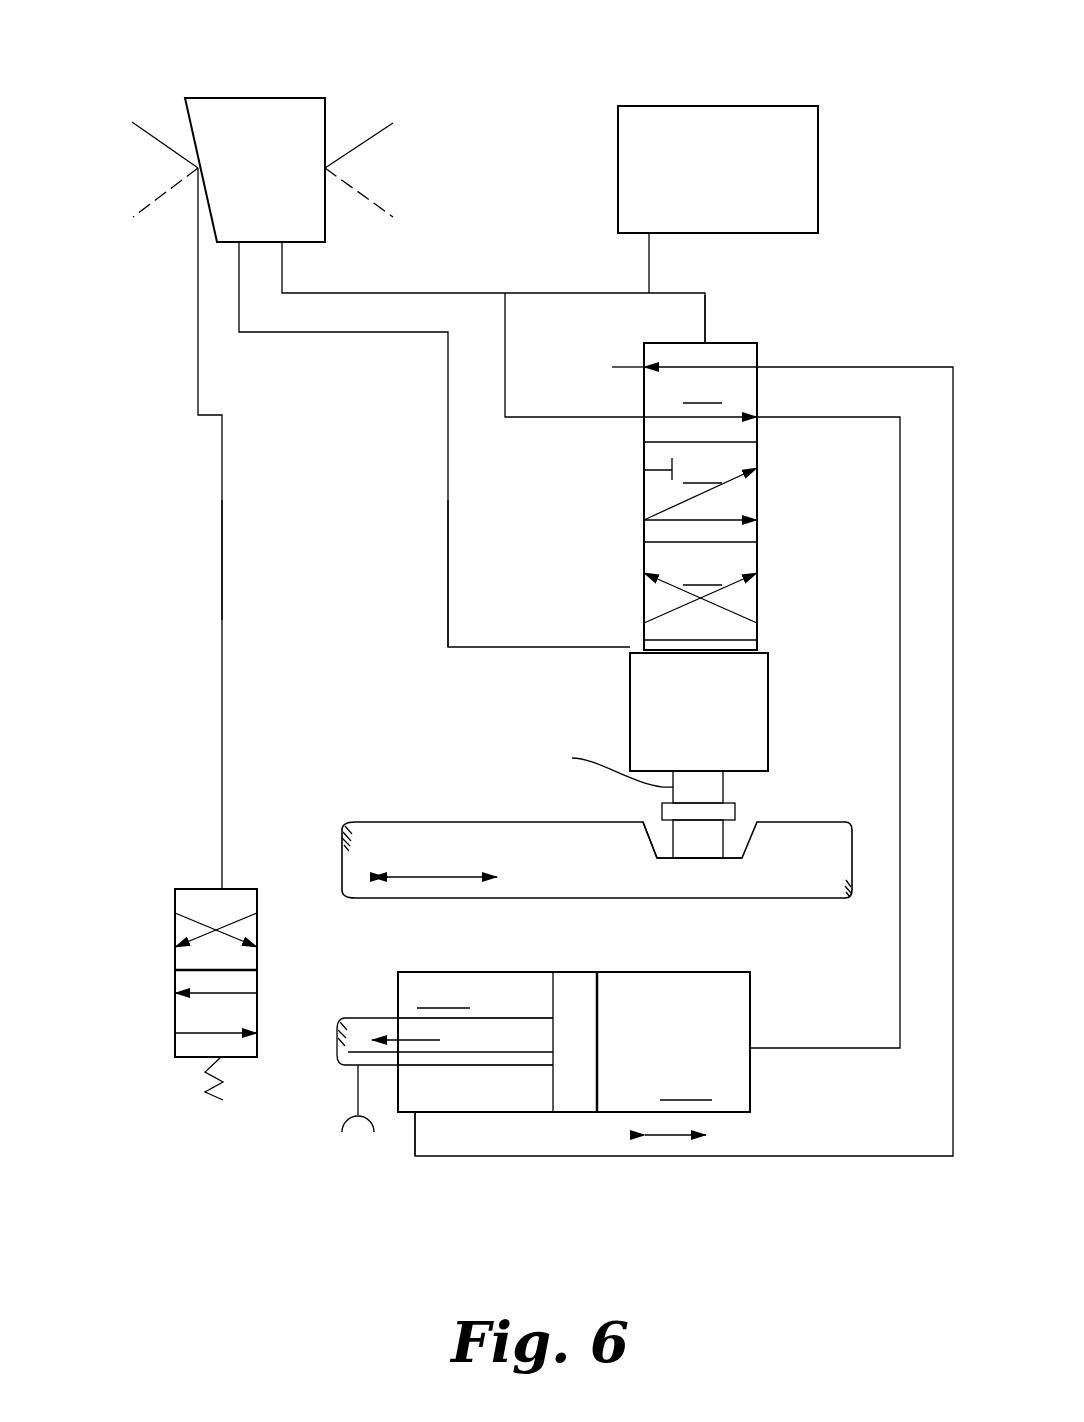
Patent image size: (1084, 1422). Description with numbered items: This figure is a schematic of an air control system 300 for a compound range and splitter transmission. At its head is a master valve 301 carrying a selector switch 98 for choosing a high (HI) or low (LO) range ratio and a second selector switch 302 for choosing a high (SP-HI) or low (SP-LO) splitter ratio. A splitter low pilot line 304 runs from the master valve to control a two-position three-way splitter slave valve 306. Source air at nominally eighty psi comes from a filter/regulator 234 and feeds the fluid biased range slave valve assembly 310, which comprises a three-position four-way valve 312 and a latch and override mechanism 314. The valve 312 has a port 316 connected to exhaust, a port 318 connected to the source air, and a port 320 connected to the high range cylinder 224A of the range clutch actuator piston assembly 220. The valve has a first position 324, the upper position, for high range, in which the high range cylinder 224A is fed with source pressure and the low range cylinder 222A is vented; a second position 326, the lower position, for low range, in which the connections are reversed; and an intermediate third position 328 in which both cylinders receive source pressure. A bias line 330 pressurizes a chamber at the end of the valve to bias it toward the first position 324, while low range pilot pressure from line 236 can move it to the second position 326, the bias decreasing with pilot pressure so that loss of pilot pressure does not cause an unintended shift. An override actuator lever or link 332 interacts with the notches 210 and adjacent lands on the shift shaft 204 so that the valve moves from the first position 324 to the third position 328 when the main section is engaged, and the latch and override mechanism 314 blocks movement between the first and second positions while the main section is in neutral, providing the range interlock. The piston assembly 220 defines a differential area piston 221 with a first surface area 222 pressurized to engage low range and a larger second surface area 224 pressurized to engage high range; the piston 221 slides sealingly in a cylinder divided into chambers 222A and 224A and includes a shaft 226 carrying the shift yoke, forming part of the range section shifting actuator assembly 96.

The master valve 301 is at (270, 83).
The second selector switch 302 is at (170, 147).
The selector switch 98 is at (367, 143).
The filter/regulator 234 is at (750, 106).
The air control system 300 is at (865, 263).
The bias line 330 is at (735, 316).
The override actuator lever or link 332 is at (757, 367).
The exhaust port 316 is at (644, 367).
The source port 318 is at (644, 417).
The high range port 320 is at (757, 418).
The first position 324 is at (638, 496).
The third position 328 is at (700, 488).
The second position 326 is at (700, 591).
The three-position four-way valve 312 is at (623, 473).
The fluid biased range slave valve assembly 310 is at (623, 612).
The low range pilot line 236 is at (448, 563).
The splitter low pilot line 304 is at (222, 562).
The latch and override mechanism 314 is at (630, 678).
The shift shaft 204 is at (383, 826).
The notches 210 is at (652, 857).
The splitter slave valve 306 is at (157, 938).
The range section shifting actuator assembly 96 is at (777, 1015).
The low range cylinder 222A is at (437, 1042).
The high range cylinder 224A is at (705, 1042).
The second surface area 224 is at (553, 1006).
The differential area piston 221 is at (582, 1053).
The shaft 226 is at (460, 1053).
The first surface area 222 is at (550, 1090).
The range clutch actuator piston assembly 220 is at (565, 1132).